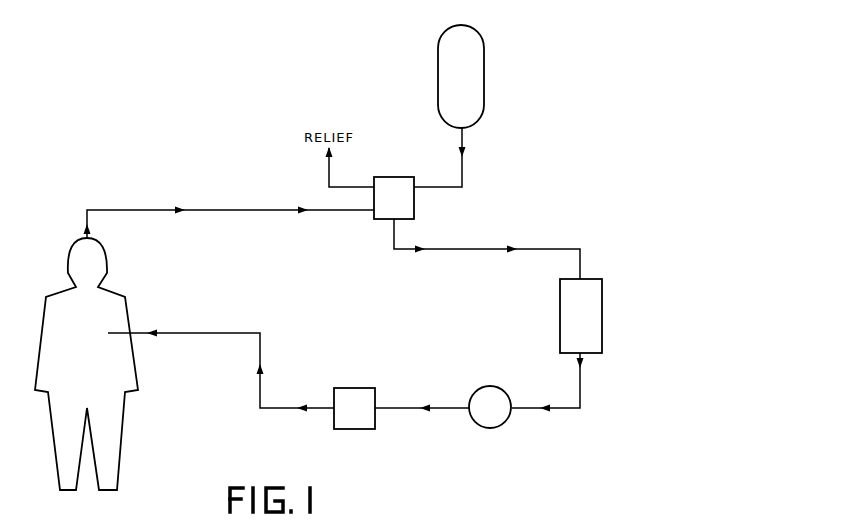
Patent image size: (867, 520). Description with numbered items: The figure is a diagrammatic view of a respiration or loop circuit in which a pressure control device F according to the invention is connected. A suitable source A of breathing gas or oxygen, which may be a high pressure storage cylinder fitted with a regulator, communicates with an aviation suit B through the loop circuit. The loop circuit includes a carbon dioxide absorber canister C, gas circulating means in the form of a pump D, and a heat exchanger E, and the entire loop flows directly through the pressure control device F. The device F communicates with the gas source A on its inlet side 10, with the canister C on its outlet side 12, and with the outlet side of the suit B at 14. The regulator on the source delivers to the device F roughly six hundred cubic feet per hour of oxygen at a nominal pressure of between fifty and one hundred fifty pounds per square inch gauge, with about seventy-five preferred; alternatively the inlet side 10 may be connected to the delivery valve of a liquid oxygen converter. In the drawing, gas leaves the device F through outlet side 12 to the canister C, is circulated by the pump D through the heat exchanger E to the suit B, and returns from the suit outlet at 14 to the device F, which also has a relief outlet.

The source of breathing gas or oxygen A is at (477, 75).
The aviation suit B is at (52, 334).
The carbon dioxide absorber canister C is at (598, 312).
The pump D is at (493, 418).
The heat exchanger E is at (352, 424).
The pressure control device F is at (407, 203).
The inlet side 10 is at (415, 185).
The outlet side 12 is at (397, 221).
The suit outlet connection 14 is at (374, 211).